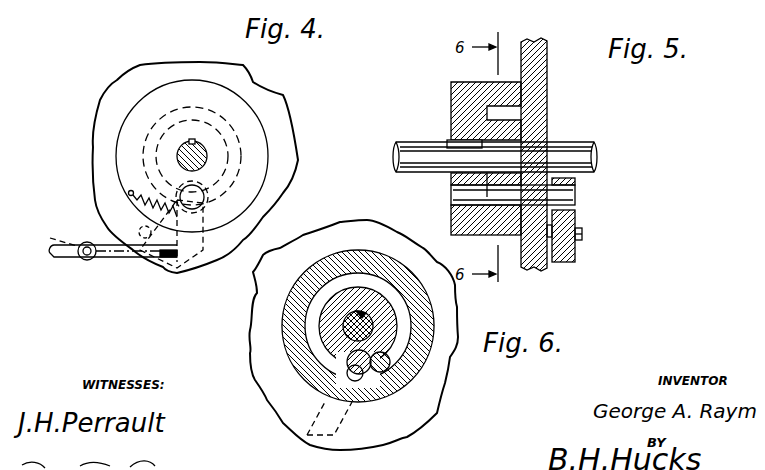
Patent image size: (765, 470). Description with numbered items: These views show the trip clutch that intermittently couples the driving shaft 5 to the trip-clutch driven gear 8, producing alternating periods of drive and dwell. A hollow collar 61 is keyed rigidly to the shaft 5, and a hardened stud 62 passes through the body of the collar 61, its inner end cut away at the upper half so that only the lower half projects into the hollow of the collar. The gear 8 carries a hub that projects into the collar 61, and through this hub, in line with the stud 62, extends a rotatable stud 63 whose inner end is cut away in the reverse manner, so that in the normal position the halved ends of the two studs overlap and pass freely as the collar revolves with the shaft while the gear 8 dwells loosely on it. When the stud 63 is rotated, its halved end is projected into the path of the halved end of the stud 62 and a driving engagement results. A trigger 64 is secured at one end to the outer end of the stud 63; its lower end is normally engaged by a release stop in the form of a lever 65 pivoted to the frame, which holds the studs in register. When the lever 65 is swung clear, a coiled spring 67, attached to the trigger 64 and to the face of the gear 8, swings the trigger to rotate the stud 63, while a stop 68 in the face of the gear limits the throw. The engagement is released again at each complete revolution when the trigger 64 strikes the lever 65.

In FIG. 4, the driving shaft 5 is at (191, 5).
In FIG. 5, the driving shaft 5 is at (423, 147).
In FIG. 6, the driving shaft 5 is at (373, 320).
In FIG. 4, the trip-clutch driven gear 8 is at (95, 151).
In FIG. 5, the trip-clutch driven gear 8 is at (547, 88).
In FIG. 6, the trip-clutch driven gear 8 is at (343, 222).
In FIG. 5, the hollow collar 61 is at (451, 101).
In FIG. 6, the hollow collar 61 is at (348, 258).
In FIG. 4, the hardened stud 62 is at (200, 203).
In FIG. 5, the hardened stud 62 is at (451, 192).
In FIG. 6, the hardened stud 62 is at (397, 376).
In FIG. 5, the rotatable stud 63 is at (575, 198).
In FIG. 6, the rotatable stud 63 is at (363, 373).
In FIG. 4, the trigger 64 is at (203, 248).
In FIG. 5, the trigger 64 is at (575, 218).
In FIG. 6, the trigger 64 is at (323, 413).
In FIG. 4, the lever 65 is at (117, 257).
In FIG. 4, the coiled spring 67 is at (133, 200).
In FIG. 4, the stop 68 is at (140, 232).
In FIG. 5, the stop 68 is at (581, 240).